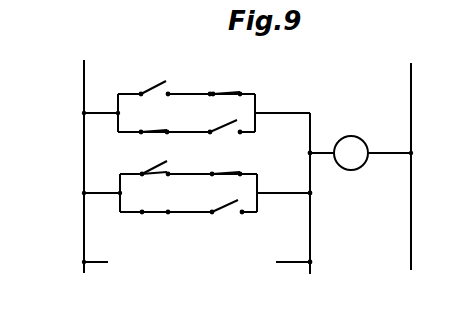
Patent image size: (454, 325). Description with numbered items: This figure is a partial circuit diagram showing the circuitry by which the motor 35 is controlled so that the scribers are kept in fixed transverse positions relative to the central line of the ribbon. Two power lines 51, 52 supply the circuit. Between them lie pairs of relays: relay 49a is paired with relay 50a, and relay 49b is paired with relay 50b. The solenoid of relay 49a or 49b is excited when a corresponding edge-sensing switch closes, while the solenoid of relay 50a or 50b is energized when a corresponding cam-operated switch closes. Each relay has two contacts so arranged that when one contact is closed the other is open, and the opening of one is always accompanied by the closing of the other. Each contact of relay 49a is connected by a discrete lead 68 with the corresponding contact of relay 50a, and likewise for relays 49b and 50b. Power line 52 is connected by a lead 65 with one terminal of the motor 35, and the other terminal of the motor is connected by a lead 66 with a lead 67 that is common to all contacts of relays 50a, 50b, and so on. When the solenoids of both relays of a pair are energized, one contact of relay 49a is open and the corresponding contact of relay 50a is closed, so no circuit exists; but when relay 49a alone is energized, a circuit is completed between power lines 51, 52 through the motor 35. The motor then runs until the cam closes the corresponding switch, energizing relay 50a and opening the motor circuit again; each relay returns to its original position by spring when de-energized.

The power line 51 is at (84, 75).
The power line 52 is at (411, 75).
The relay 49a is at (152, 87).
The relay 49b is at (147, 170).
The relay 50a is at (229, 91).
The relay 50b is at (238, 162).
The lead 68 is at (188, 94).
The lead 66 is at (322, 150).
The lead 65 is at (386, 152).
The motor 35 is at (352, 174).
The lead 67 is at (313, 237).